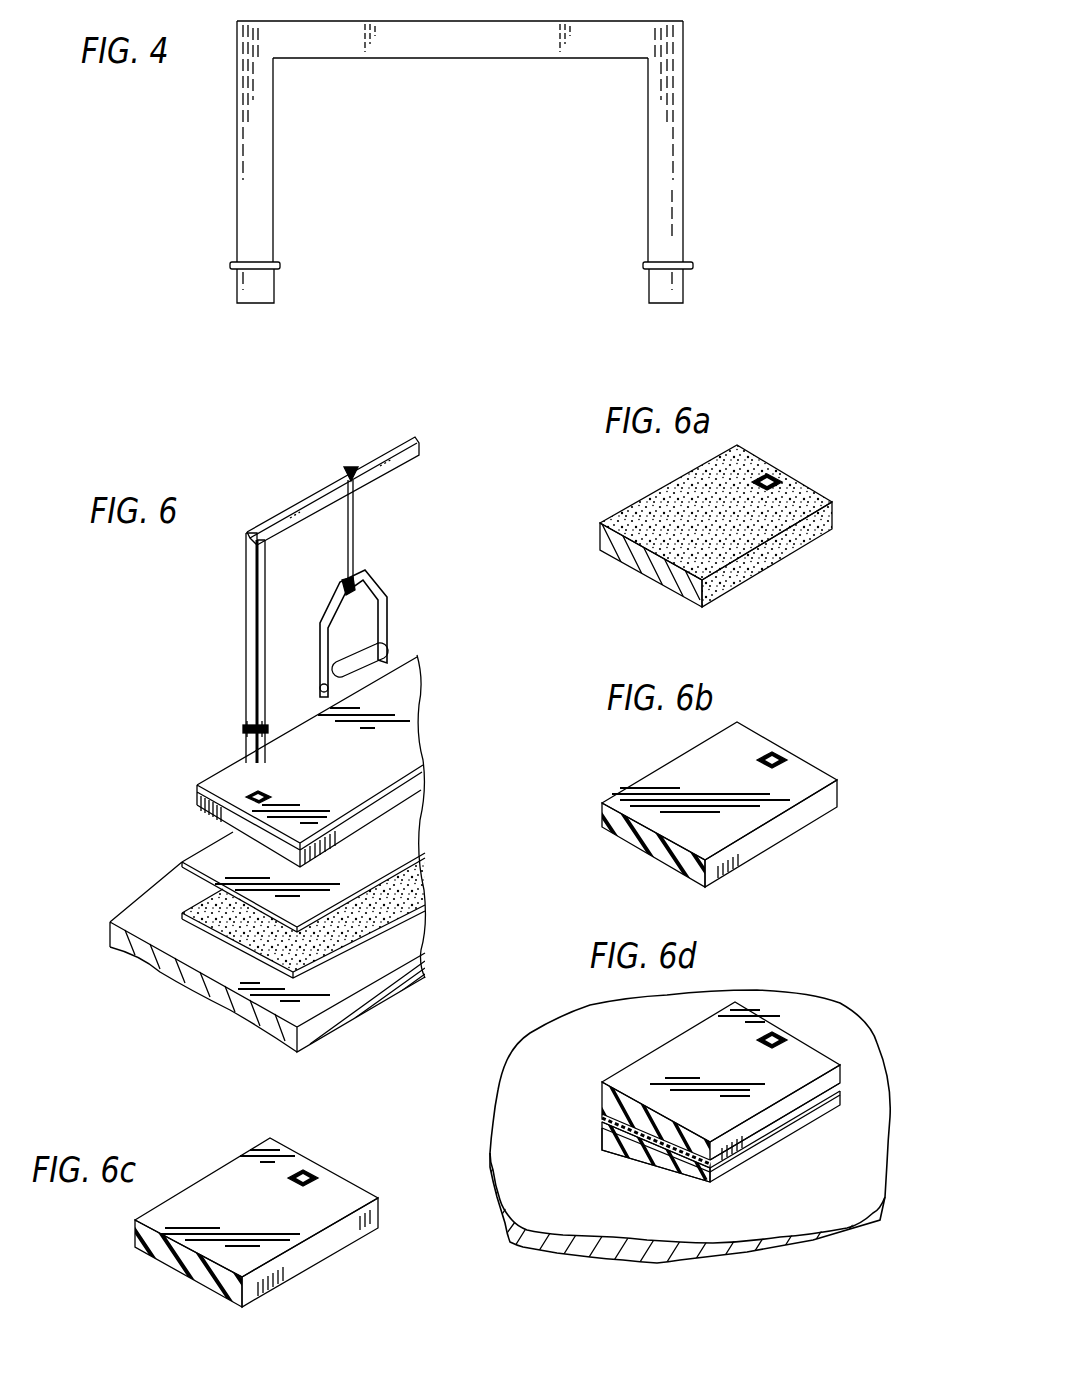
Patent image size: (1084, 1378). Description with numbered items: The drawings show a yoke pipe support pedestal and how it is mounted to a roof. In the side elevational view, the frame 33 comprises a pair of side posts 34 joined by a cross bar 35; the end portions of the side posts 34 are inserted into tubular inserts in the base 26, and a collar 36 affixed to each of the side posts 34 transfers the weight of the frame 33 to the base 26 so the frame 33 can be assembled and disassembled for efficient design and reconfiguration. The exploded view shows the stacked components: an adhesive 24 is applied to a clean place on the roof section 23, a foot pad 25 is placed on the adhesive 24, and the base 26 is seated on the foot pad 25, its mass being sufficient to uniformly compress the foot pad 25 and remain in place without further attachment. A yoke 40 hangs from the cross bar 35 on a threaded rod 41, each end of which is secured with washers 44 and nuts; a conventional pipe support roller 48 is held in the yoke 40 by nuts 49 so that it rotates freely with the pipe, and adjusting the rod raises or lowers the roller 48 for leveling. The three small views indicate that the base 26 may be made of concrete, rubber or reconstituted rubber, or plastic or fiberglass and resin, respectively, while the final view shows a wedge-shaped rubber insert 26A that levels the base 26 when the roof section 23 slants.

In FIG. 6, the roof section 23 is at (148, 905).
In FIG. 6, the adhesive 24 is at (238, 943).
In FIG. 6D, the adhesive 24 is at (815, 1118).
In FIG. 6, the foot pad 25 is at (203, 860).
In FIG. 6D, the foot pad 25 is at (765, 1140).
In FIG. 6, the base 26 is at (223, 773).
In FIG. 6A, the base 26 is at (730, 460).
In FIG. 6B, the base 26 is at (744, 750).
In FIG. 6C, the base 26 is at (222, 1182).
In FIG. 6D, the base 26 is at (665, 1055).
In FIG. 6D, the insert 26A is at (606, 1138).
In FIG. 6, the frame 33 is at (246, 610).
In FIG. 4, the side posts 34 is at (245, 158).
In FIG. 4, the cross bar 35 is at (485, 50).
In FIG. 6, the cross bar 35 is at (290, 508).
In FIG. 4, the collar 36 is at (232, 264).
In FIG. 6, the yoke 40 is at (370, 585).
In FIG. 6, the threaded rod 41 is at (354, 535).
In FIG. 6, the washers 44 is at (345, 470).
In FIG. 6, the pipe support roller 48 is at (355, 662).
In FIG. 6, the nuts 49 is at (320, 687).